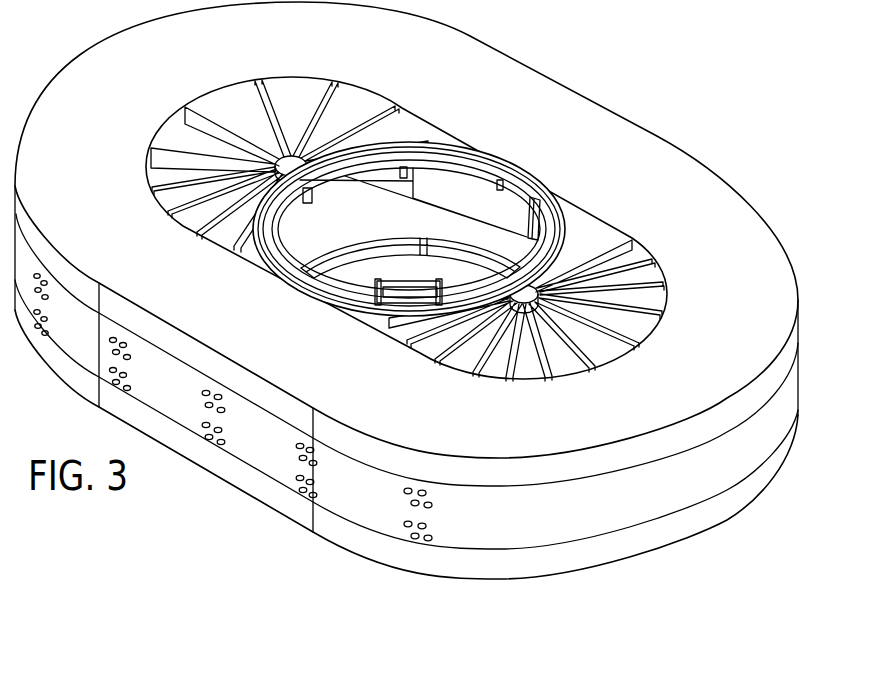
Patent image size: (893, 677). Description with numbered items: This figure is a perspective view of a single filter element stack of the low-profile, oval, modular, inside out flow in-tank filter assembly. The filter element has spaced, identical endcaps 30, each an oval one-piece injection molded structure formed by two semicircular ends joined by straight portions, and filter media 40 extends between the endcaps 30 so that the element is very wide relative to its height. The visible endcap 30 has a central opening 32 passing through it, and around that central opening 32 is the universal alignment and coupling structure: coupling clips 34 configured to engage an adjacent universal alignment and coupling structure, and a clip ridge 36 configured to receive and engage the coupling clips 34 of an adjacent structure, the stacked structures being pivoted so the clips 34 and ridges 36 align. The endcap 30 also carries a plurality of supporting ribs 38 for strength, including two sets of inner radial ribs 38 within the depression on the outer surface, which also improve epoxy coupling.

The endcap 30 is at (706, 217).
The central opening 32 is at (453, 233).
The coupling clips 34 is at (553, 217).
The clip ridge 36 is at (460, 143).
The supporting ribs 38 is at (270, 120).
The filter media 40 is at (708, 490).